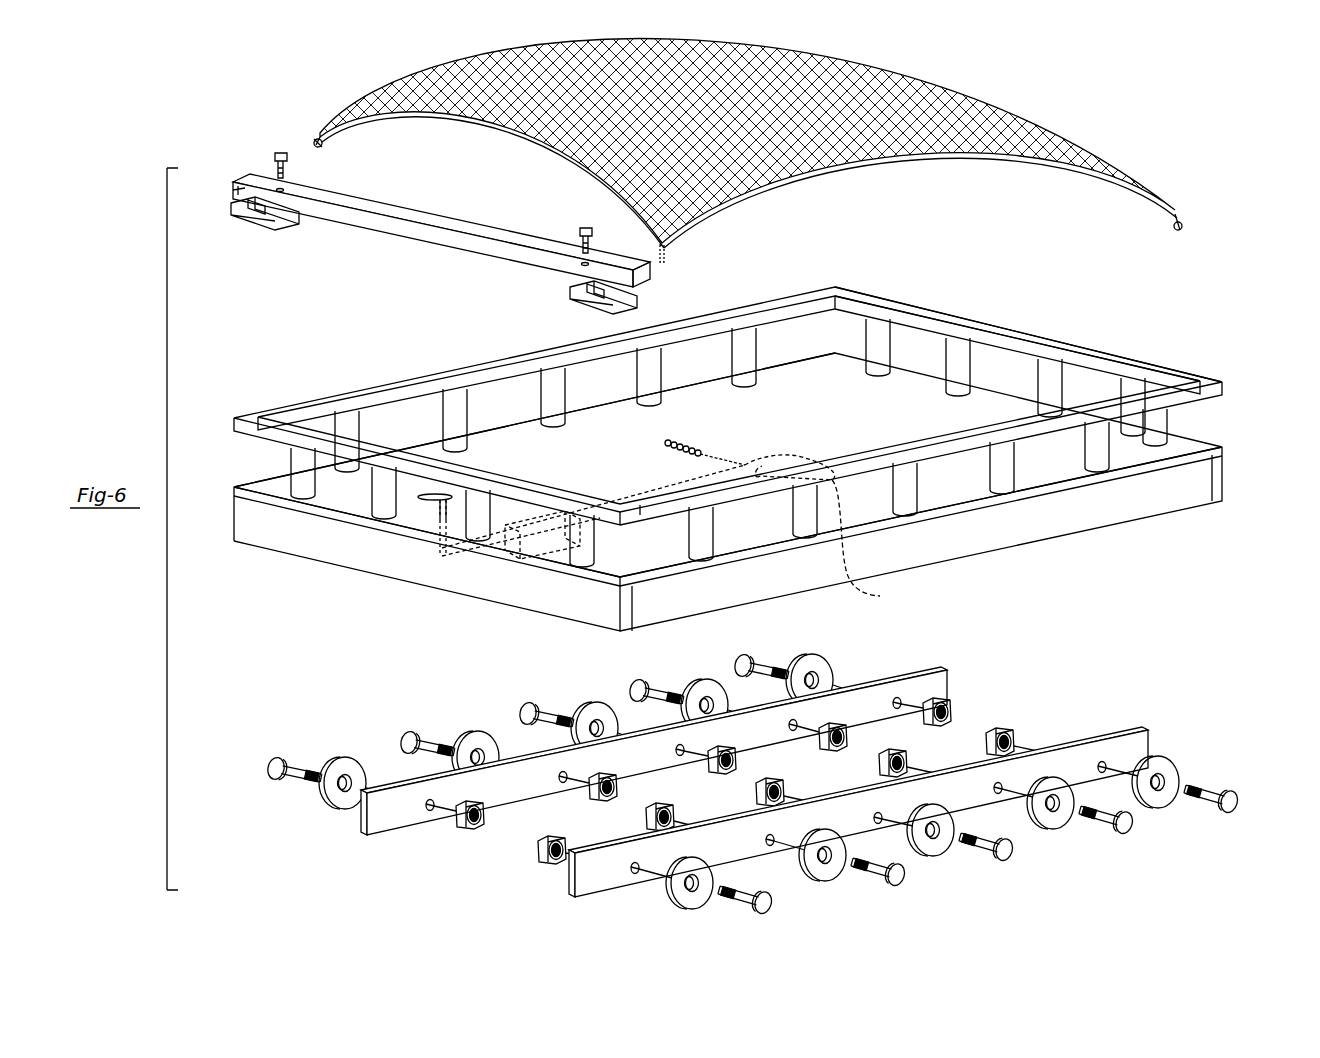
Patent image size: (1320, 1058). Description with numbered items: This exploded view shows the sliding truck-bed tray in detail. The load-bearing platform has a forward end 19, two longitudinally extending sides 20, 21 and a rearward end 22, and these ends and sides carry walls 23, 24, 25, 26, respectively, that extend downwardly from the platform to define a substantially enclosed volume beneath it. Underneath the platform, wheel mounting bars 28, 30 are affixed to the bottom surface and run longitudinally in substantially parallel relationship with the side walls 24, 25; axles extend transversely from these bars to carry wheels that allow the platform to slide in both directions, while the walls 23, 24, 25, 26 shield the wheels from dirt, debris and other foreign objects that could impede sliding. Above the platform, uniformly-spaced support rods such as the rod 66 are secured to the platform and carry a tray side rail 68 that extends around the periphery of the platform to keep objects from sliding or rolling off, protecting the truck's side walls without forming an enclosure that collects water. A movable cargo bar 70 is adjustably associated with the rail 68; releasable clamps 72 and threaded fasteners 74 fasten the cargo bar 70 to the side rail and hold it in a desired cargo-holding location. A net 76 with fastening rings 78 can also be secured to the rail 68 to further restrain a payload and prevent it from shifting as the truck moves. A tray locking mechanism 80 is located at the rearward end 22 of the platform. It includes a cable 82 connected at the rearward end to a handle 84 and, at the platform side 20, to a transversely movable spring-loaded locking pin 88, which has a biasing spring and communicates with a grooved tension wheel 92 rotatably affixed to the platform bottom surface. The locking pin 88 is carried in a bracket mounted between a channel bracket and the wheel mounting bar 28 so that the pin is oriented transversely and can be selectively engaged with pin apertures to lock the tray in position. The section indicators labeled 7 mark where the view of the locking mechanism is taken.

The section line of FIG. 7 is at (653, 427).
The forward end 19 is at (758, 471).
The longitudinally extending side 20 is at (748, 406).
The longitudinally extending side 21 is at (758, 518).
The rearward end 22 is at (335, 598).
The wall 23 is at (1225, 490).
The side wall 24 is at (240, 476).
The side wall 25 is at (935, 550).
The wall 26 is at (470, 578).
The wheel mounting bar 28 is at (942, 665).
The wheel mounting bar 30 is at (1118, 728).
The support rod 66 is at (880, 345).
The tray side rail 68 is at (1198, 378).
The movable cargo bar 70 is at (430, 206).
The releasable clamp 72 is at (268, 224).
The threaded fastener 74 is at (280, 158).
The net 76 is at (1000, 112).
The fastening ring 78 is at (318, 140).
The tray locking mechanism 80 is at (622, 494).
The cable 82 is at (790, 450).
The handle 84 is at (412, 516).
The spring-loaded locking pin 88 is at (668, 452).
The grooved tension wheel 92 is at (858, 596).